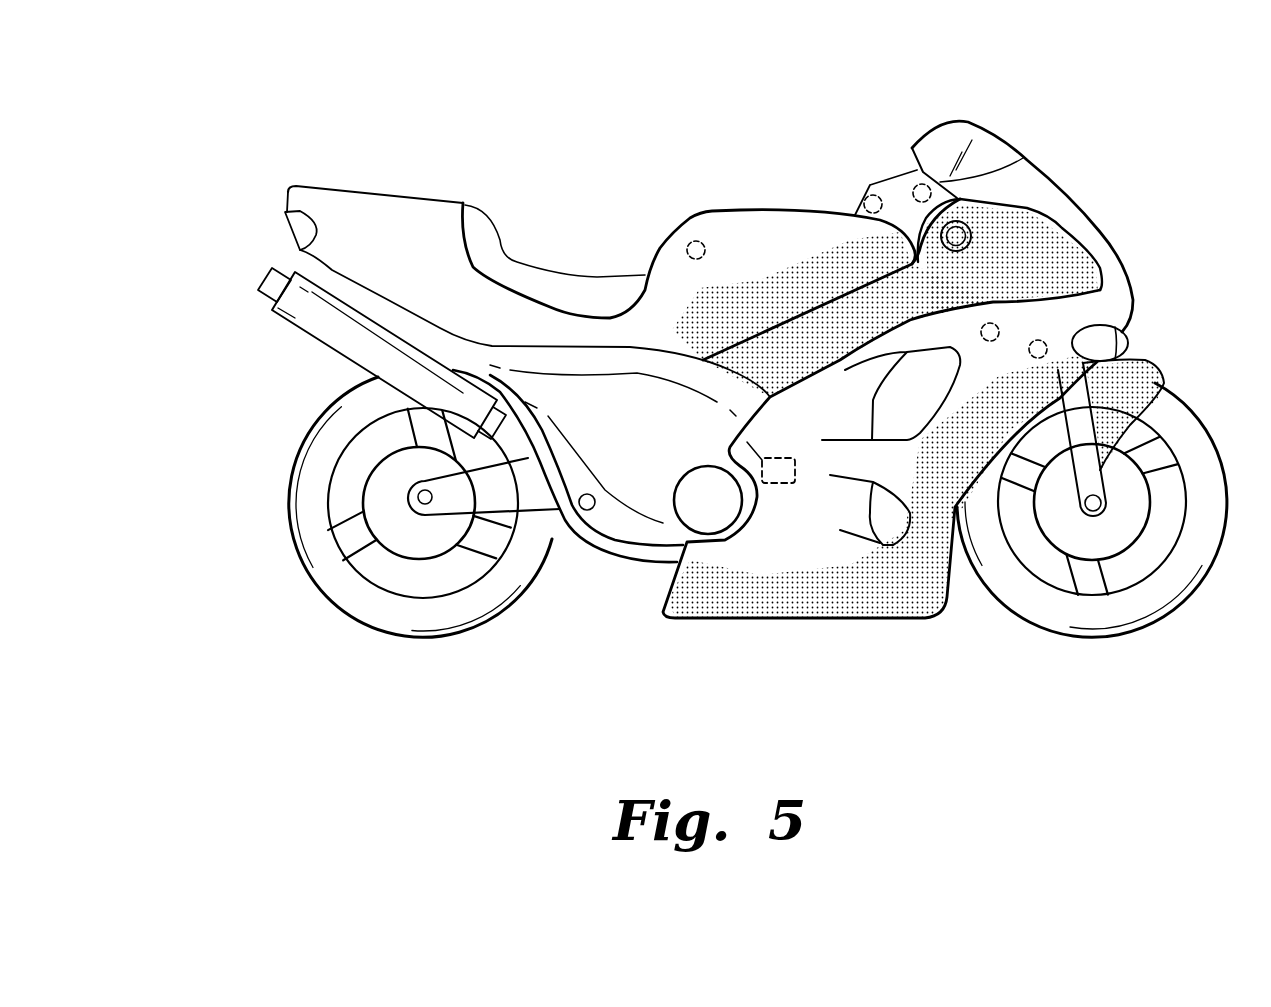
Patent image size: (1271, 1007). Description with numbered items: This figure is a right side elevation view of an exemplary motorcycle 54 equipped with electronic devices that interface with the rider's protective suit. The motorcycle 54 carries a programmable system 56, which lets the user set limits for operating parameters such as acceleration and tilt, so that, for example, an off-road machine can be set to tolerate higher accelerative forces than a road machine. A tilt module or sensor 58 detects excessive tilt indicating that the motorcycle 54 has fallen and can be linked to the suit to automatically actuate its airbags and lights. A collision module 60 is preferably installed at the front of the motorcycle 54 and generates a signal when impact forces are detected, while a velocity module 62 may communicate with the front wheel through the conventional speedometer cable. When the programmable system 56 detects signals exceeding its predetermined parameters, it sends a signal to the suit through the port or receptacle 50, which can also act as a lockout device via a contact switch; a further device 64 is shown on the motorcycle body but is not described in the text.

The port or receptacle 50 is at (873, 195).
The motorcycle 54 is at (347, 682).
The programmable system 56 is at (915, 185).
The tilt module or sensor 58 is at (697, 240).
The collision module 60 is at (994, 323).
The velocity module 62 is at (1045, 344).
The controller 64 is at (745, 442).